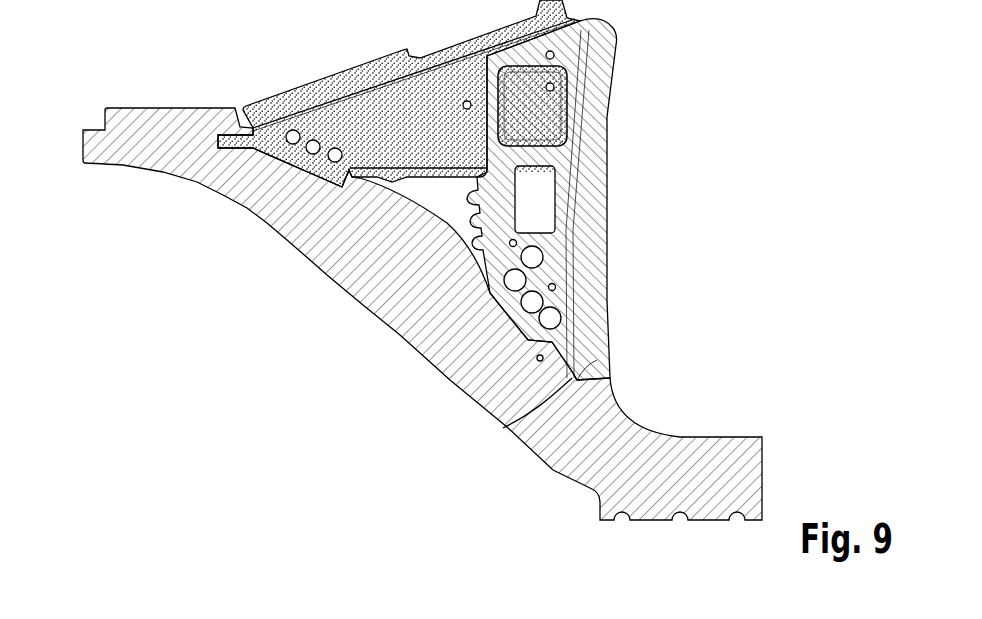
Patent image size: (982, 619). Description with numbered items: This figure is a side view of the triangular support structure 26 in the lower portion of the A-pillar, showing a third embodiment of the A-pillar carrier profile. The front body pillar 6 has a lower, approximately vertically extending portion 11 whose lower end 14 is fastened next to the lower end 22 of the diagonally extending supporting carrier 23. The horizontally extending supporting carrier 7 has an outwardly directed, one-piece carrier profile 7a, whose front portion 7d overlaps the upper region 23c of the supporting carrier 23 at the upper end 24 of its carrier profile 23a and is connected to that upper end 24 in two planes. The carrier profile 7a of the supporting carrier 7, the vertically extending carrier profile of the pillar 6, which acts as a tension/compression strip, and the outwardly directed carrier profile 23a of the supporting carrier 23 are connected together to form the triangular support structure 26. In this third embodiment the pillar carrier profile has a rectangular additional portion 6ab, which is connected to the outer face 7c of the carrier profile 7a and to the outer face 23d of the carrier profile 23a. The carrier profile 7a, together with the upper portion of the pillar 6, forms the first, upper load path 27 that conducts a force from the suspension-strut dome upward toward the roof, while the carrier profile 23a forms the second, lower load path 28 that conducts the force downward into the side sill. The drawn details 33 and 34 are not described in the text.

The front body pillar 6 is at (601, 233).
The rectangular additional portion 6ab is at (553, 248).
The supporting carrier 7 is at (511, 93).
The carrier profile 7a is at (511, 93).
The outer face 7c is at (511, 93).
The front portion 7d is at (313, 100).
The lower portion 11 is at (601, 233).
The lower end 14 is at (503, 428).
The lower end 22 is at (753, 410).
The supporting carrier 23 is at (401, 314).
The carrier profile 23a is at (401, 314).
The upper region 23c is at (401, 314).
The outer face 23d is at (401, 314).
The upper end 24 is at (401, 314).
The triangular support structure 26 is at (511, 93).
The first, upper load path 27 is at (511, 93).
The second, lower load path 28 is at (401, 314).
The pin / hole 33 is at (553, 86).
The pin 34 is at (537, 357).